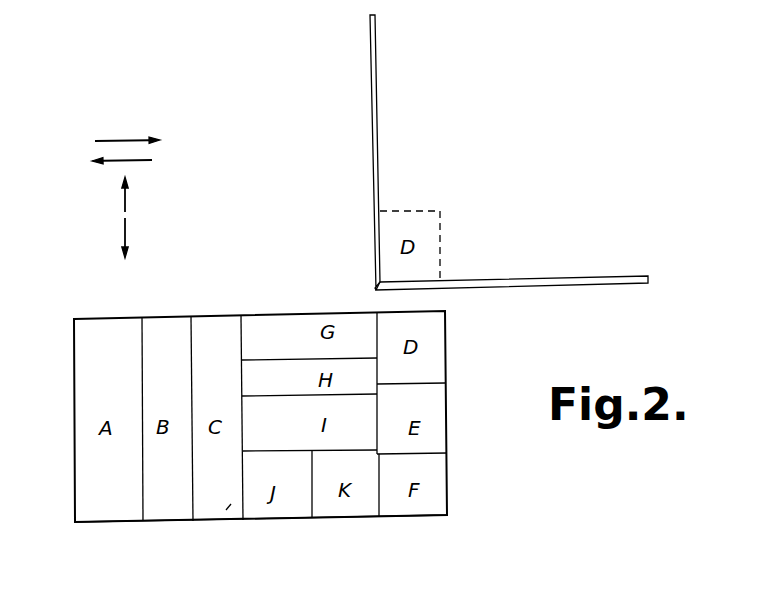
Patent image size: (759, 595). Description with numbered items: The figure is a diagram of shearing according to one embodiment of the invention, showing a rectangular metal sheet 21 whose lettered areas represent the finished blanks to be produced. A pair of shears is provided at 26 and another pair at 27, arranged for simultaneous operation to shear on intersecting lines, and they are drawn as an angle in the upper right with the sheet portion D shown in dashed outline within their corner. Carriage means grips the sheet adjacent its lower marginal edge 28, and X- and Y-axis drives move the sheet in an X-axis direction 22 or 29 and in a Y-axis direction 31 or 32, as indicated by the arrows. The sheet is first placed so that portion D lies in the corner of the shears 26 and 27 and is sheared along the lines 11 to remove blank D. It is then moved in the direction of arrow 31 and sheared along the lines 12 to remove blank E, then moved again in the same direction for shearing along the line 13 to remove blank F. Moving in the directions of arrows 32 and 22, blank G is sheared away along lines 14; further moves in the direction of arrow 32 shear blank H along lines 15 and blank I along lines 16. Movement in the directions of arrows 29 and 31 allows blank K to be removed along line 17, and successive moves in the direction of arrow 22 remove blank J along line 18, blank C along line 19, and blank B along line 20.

The shearing lines 11 is at (375, 322).
The shearing lines 12 is at (378, 406).
The shearing line 13 is at (380, 473).
The shearing lines 14 is at (243, 322).
The shearing lines 15 is at (283, 394).
The shearing lines 16 is at (283, 450).
The shearing line 17 is at (313, 468).
The shearing line 18 is at (246, 508).
The shearing line 19 is at (192, 470).
The shearing line 20 is at (142, 490).
The metal sheet 21 is at (61, 454).
The arrow 22 is at (110, 140).
The pair of shears 26 is at (537, 279).
The pair of shears 27 is at (377, 93).
The lower marginal edge 28 is at (134, 524).
The arrow 29 is at (137, 161).
The arrow 31 is at (120, 192).
The arrow 32 is at (128, 235).